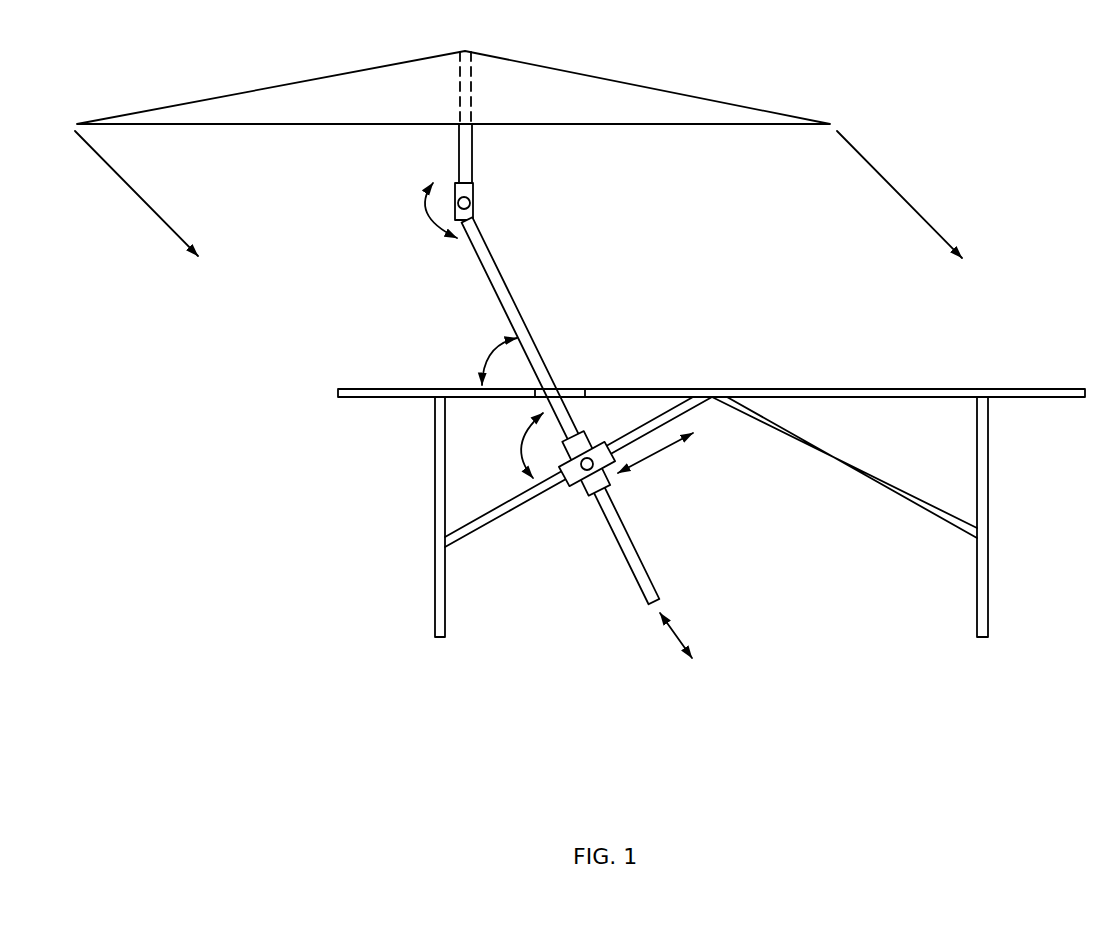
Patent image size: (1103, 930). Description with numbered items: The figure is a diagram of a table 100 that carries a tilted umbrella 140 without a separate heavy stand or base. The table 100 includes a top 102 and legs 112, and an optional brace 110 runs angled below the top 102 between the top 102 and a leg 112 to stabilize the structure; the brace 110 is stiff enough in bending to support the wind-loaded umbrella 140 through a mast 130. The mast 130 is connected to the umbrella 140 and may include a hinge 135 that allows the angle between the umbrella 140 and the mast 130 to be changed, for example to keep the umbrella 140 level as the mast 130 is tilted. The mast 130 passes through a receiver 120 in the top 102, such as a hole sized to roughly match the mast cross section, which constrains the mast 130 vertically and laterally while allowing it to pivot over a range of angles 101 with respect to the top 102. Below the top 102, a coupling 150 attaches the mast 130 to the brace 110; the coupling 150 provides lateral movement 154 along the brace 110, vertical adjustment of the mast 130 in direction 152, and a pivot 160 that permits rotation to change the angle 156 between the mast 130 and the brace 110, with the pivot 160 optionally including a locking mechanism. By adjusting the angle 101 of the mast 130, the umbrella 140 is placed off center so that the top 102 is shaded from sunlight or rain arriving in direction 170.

The table 100 is at (385, 333).
The angle of mast 101 is at (485, 357).
The top 102 is at (918, 389).
The brace 110 is at (462, 545).
The leg 112 is at (435, 502).
The receiver 120 is at (582, 387).
The mast 130 is at (518, 303).
The hinge 135 is at (483, 202).
The umbrella 140 is at (650, 85).
The coupling 150 is at (617, 487).
The direction 152 is at (689, 650).
The lateral movement 154 is at (655, 455).
The angle 156 is at (513, 445).
The pivot 160 is at (587, 477).
The direction 170 is at (539, 206).